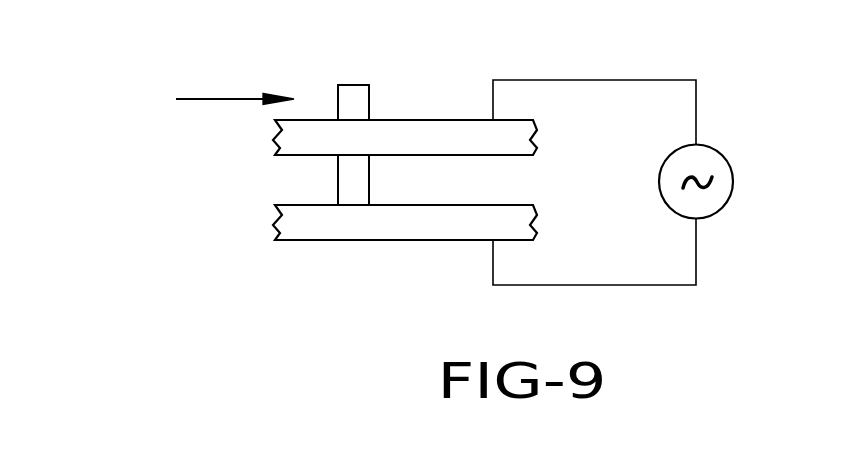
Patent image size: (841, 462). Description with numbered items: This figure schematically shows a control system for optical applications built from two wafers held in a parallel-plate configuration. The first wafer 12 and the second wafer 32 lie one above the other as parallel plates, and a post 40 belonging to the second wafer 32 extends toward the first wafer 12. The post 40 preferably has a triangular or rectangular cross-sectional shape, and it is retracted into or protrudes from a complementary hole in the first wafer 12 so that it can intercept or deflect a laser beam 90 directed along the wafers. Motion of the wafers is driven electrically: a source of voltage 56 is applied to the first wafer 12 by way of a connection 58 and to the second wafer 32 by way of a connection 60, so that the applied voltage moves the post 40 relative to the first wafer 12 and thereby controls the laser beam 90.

The laser beam 90 is at (222, 100).
The post 40 is at (353, 85).
The first wafer 12 is at (427, 120).
The second wafer 32 is at (427, 241).
The connection 58 is at (592, 80).
The connection 60 is at (593, 285).
The source of voltage 56 is at (727, 197).